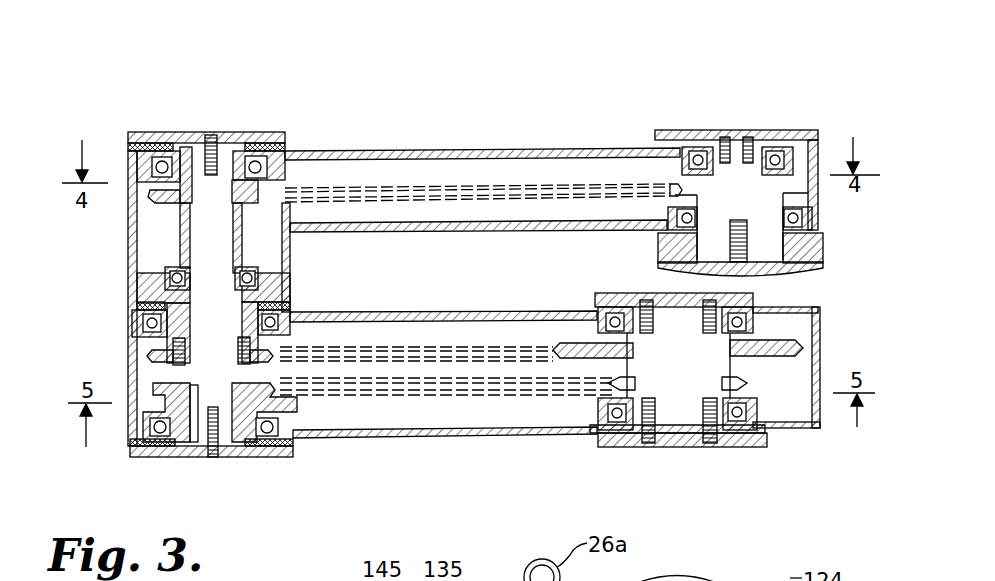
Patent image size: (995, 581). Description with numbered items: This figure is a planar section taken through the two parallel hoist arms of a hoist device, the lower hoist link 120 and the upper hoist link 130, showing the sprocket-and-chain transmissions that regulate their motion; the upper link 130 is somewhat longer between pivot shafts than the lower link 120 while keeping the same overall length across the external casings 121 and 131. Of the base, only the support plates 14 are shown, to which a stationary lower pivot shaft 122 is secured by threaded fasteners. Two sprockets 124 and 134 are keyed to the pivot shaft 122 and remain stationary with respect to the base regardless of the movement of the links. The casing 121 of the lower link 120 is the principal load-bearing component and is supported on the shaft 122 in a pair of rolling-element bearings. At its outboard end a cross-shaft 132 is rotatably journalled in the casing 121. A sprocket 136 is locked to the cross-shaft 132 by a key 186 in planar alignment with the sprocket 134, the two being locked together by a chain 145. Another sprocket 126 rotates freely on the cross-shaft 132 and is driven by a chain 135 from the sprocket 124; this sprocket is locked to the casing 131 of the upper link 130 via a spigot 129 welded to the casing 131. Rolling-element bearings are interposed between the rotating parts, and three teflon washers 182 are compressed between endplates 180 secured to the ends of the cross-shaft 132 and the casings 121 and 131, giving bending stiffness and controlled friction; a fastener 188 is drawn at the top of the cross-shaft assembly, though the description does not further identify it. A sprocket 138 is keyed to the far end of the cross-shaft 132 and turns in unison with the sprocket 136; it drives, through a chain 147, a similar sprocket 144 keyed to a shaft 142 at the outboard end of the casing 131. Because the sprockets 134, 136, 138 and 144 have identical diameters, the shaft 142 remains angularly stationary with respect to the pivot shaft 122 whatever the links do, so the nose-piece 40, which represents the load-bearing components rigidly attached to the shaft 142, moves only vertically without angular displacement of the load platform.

The upper hoist link 130 is at (378, 135).
The casing of the upper hoist link 131 is at (128, 167).
The teflon washers 182 is at (160, 133).
The screw 188 is at (205, 138).
The endplates 180 is at (253, 130).
The chain 147 is at (465, 186).
The sprocket 144 is at (680, 190).
The shaft 142 is at (733, 163).
The nose-piece 40 is at (822, 247).
The support plates 14 is at (753, 300).
The sprocket 124 is at (787, 342).
The lower pivot shaft 122 is at (670, 443).
The sprocket 134 is at (780, 397).
The sprocket 138 is at (157, 203).
The cross-shaft 132 is at (198, 242).
The spigot 129 is at (128, 287).
The casing of the lower hoist link 121 is at (132, 353).
The sprocket 126 is at (155, 352).
The key 186 is at (200, 428).
The sprocket 136 is at (315, 430).
The lower hoist link 120 is at (446, 397).
The chain 145 is at (427, 395).
The chain 135 is at (432, 312).